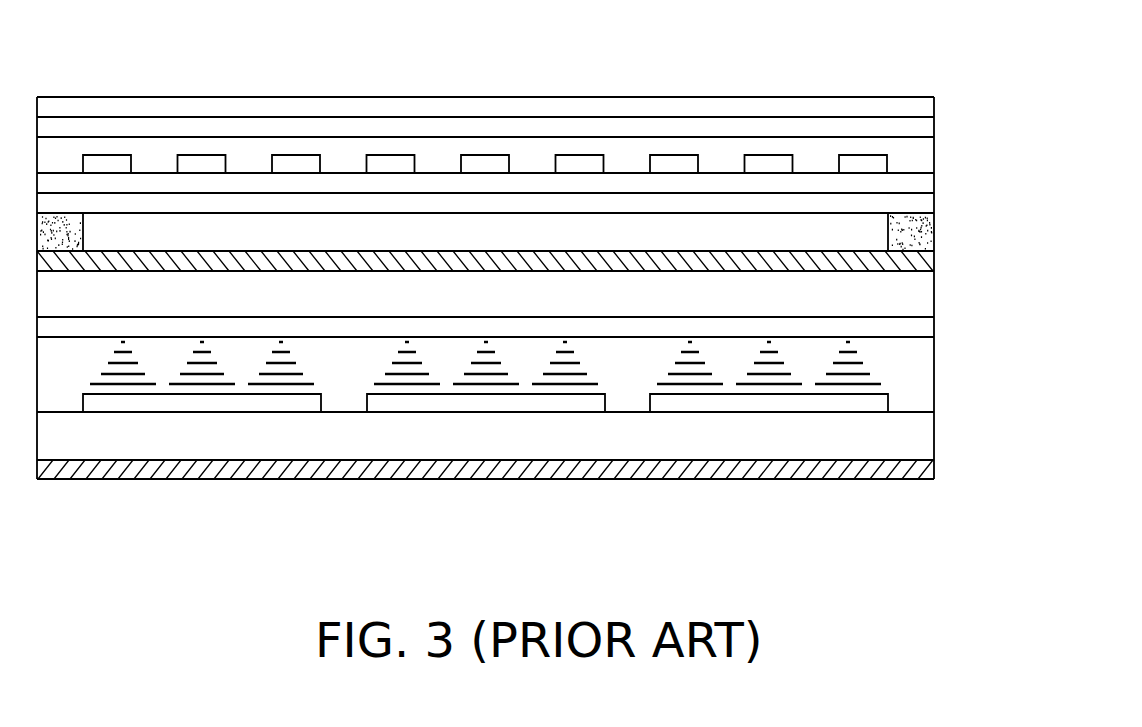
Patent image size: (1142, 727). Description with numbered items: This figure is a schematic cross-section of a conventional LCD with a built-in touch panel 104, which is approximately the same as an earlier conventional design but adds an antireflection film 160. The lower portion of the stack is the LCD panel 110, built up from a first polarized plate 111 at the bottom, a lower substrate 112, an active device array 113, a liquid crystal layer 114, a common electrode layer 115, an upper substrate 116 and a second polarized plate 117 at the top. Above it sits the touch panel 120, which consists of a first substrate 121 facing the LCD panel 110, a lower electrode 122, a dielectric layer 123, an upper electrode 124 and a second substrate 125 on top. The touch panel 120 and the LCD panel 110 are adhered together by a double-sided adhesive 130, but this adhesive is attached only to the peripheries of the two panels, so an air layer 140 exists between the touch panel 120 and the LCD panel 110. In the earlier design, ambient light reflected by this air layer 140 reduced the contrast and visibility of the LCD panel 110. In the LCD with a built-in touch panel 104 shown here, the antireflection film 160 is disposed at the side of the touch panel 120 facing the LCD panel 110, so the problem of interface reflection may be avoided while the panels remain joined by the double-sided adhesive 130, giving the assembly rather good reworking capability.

The LCD with a built-in touch panel 104 is at (925, 532).
The LCD panel 110 is at (1058, 253).
The first polarized plate 111 is at (922, 470).
The lower substrate 112 is at (918, 437).
The active device array 113 is at (880, 403).
The liquid crystal layer 114 is at (880, 367).
The common electrode layer 115 is at (925, 327).
The upper substrate 116 is at (910, 297).
The second polarized plate 117 is at (930, 258).
The touch panel 120 is at (1072, 27).
The first substrate 121 is at (927, 185).
The lower electrode 122 is at (880, 165).
The dielectric layer 123 is at (927, 150).
The upper electrode 124 is at (927, 127).
The second substrate 125 is at (927, 107).
The double-sided adhesive 130 is at (930, 232).
The air layer 140 is at (342, 230).
The antireflection film 160 is at (530, 207).